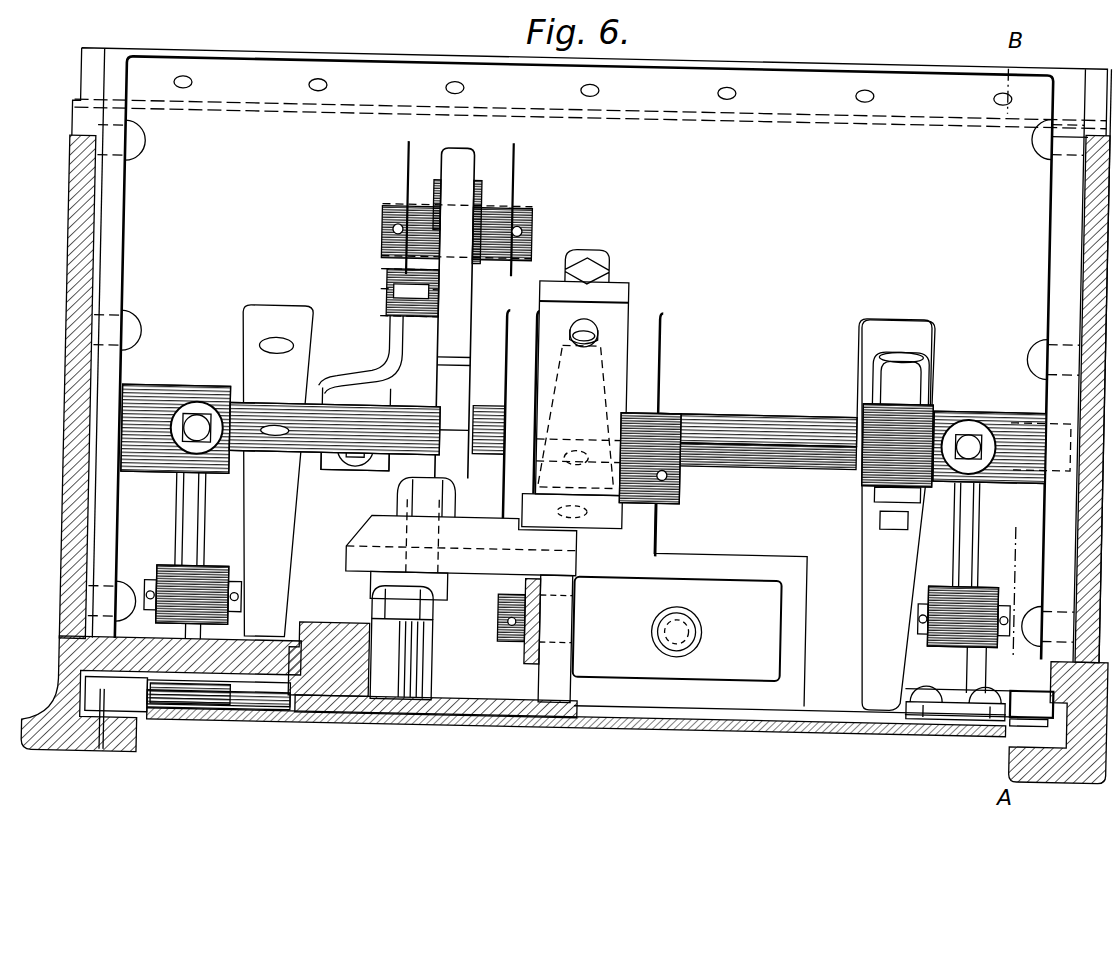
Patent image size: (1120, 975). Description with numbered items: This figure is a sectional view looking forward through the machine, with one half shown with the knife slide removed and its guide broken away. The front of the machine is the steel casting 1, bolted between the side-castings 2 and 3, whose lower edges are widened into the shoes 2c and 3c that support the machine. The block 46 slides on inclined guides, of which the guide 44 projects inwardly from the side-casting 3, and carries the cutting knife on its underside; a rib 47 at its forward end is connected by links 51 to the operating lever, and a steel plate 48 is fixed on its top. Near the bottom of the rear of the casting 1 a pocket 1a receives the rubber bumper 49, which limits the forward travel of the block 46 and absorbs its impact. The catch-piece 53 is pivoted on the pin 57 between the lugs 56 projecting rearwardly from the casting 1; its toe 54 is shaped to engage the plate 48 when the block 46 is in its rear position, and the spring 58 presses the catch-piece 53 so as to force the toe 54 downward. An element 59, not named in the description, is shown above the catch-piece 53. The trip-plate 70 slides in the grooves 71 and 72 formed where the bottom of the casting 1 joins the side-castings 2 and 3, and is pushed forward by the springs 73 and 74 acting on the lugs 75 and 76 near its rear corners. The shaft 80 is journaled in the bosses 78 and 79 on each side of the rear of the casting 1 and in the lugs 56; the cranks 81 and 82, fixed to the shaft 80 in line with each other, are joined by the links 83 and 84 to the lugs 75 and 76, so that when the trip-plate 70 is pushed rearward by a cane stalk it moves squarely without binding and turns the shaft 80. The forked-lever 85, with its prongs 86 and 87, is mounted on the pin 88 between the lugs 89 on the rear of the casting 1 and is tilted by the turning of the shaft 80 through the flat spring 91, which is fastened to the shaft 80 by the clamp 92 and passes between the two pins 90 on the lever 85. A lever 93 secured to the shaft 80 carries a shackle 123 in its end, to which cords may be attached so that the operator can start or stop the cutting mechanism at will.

The steel casting 1 is at (336, 66).
The pocket 1a is at (768, 622).
The side-casting 2 is at (1090, 272).
The shoe 2c is at (1097, 782).
The side-casting 3 is at (64, 246).
The shoe 3c is at (36, 752).
The guide 44 is at (332, 715).
The block 46 is at (328, 625).
The rib 47 is at (540, 684).
The steel plate 48 is at (368, 524).
The rubber bumper 49 is at (677, 629).
The links 51 is at (514, 642).
The catch-piece 53 is at (615, 290).
The toe 54 is at (597, 520).
The lugs 56 is at (504, 350).
The pin 57 is at (680, 490).
The spring 58 is at (612, 388).
The nut 59 is at (602, 258).
The trip-plate 70 is at (262, 706).
The groove 71 is at (1046, 728).
The groove 72 is at (102, 720).
The spring 73 is at (858, 330).
The spring 74 is at (240, 322).
The lug 75 is at (897, 516).
The lug 76 is at (170, 632).
The boss 78 is at (1015, 412).
The boss 79 is at (147, 388).
The shaft 80 is at (770, 420).
The crank 81 is at (977, 548).
The crank 82 is at (178, 505).
The link 83 is at (930, 588).
The link 84 is at (162, 570).
The forked-lever 85 is at (456, 160).
The prong 86 is at (466, 376).
The prong 87 is at (455, 490).
The pin 88 is at (392, 206).
The lugs 89 is at (402, 168).
The pins 90 is at (386, 276).
The flat spring 91 is at (392, 336).
The clamp 92 is at (344, 380).
The lever 93 is at (862, 478).
The shackle 123 is at (928, 382).